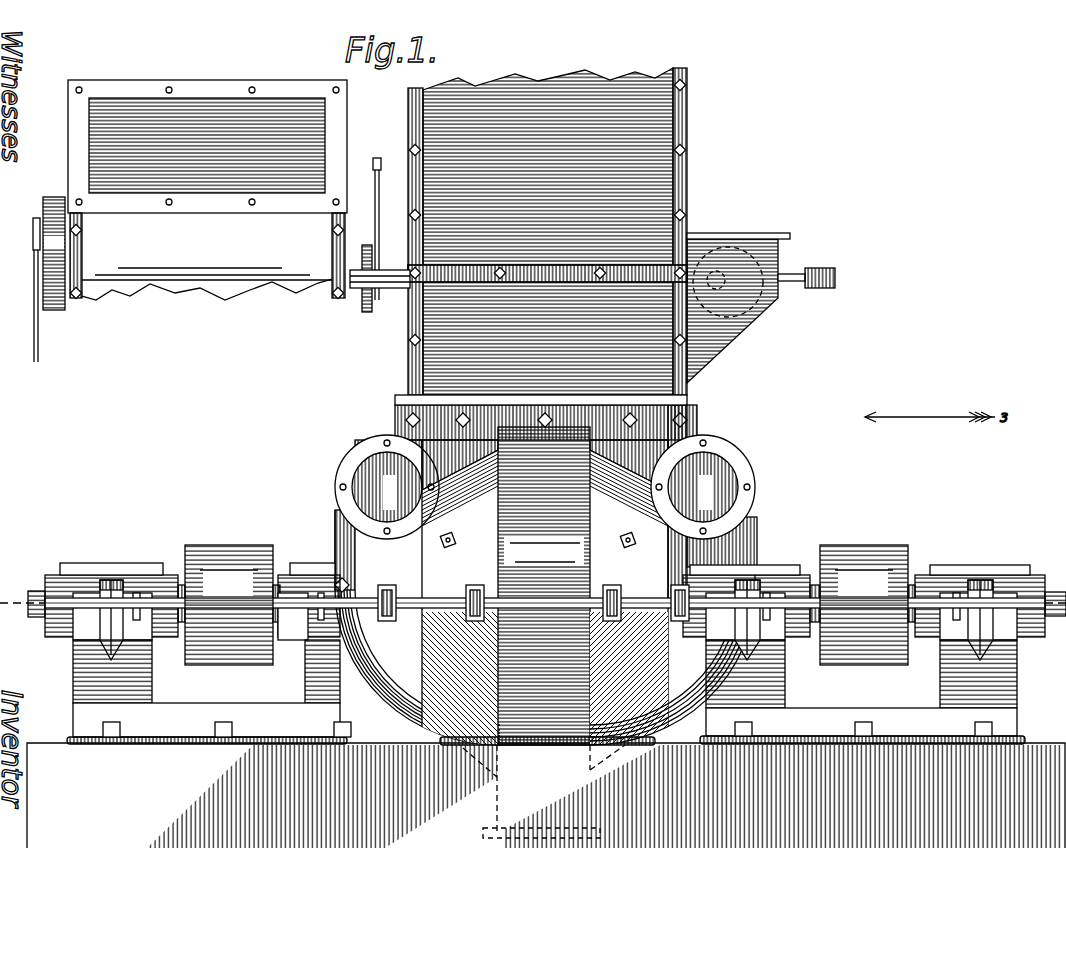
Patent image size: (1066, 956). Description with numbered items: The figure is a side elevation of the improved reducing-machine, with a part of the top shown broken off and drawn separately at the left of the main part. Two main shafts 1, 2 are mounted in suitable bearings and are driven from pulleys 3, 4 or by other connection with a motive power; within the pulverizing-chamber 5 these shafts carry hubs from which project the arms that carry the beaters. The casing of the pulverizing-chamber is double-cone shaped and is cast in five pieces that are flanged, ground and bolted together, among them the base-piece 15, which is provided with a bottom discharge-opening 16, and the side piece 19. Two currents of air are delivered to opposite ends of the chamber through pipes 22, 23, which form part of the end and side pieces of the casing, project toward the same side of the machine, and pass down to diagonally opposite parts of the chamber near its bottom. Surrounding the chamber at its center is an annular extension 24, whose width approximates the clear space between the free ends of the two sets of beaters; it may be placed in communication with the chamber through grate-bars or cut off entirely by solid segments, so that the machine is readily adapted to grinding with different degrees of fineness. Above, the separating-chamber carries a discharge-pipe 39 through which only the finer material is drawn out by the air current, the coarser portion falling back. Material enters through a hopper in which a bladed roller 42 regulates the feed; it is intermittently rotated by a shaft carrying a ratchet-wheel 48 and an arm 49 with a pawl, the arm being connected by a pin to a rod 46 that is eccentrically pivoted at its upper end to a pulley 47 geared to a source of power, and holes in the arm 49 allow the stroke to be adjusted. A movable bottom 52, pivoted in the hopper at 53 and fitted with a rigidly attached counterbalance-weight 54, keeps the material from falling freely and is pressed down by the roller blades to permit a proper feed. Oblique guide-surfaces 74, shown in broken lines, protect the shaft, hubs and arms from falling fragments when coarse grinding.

The main shaft 1 is at (30, 608).
The main shaft 2 is at (1055, 616).
The pulley 3 is at (229, 605).
The pulley 4 is at (864, 605).
The pulverizing-chamber 5 is at (629, 583).
The base-piece 15 is at (629, 682).
The bottom discharge-opening 16 is at (483, 835).
The side piece 19 is at (460, 596).
The air pipe 22 is at (417, 590).
The air pipe 23 is at (673, 575).
The annular extension 24 is at (544, 586).
The discharge-pipe 39 is at (377, 236).
The bladed roller 42 is at (722, 250).
The rod 46 is at (40, 348).
The pulley 47 is at (53, 199).
The ratchet-wheel 48 is at (362, 303).
The arm 49 is at (380, 289).
The movable bottom 52 is at (745, 318).
The pivot 53 is at (782, 275).
The counterbalance-weight 54 is at (835, 281).
The oblique guide-surfaces 74 is at (606, 434).